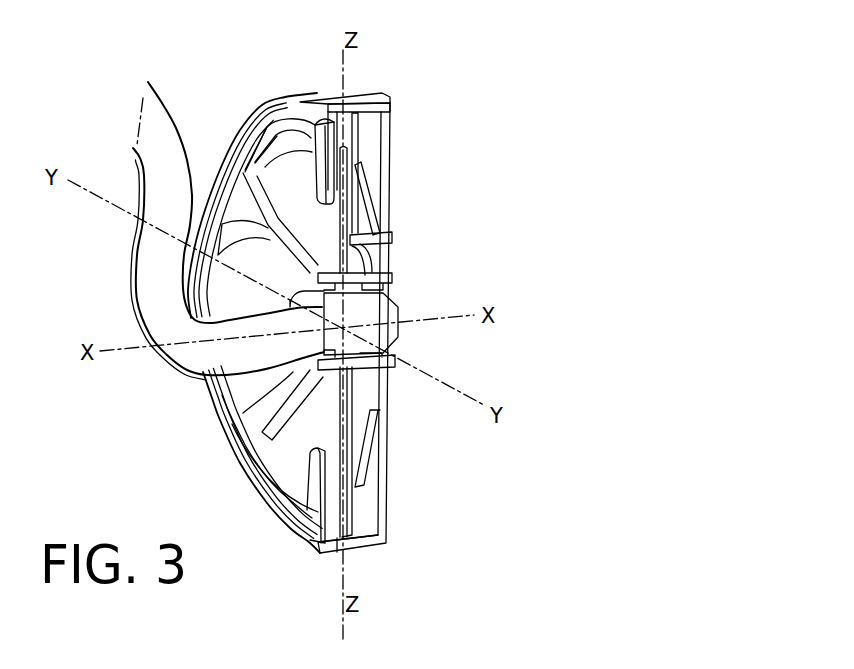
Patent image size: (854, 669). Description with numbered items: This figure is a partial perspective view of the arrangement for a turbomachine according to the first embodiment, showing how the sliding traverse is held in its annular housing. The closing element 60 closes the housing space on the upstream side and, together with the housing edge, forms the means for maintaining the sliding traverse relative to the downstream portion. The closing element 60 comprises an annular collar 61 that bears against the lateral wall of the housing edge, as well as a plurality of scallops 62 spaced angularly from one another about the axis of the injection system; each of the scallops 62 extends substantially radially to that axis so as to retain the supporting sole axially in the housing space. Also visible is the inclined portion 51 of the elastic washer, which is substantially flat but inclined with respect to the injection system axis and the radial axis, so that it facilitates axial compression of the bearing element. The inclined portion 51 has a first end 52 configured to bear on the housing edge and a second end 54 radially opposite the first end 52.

The inclined portion 51 is at (373, 195).
The first end 52 is at (390, 238).
The second end 54 is at (357, 163).
The closing element 60 is at (246, 152).
The annular collar 61 is at (281, 121).
The scallops 62 is at (323, 180).